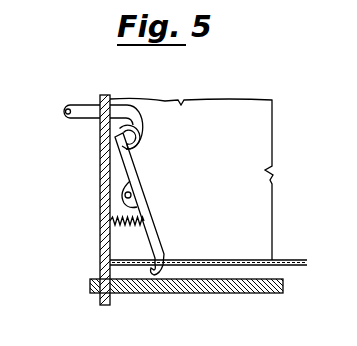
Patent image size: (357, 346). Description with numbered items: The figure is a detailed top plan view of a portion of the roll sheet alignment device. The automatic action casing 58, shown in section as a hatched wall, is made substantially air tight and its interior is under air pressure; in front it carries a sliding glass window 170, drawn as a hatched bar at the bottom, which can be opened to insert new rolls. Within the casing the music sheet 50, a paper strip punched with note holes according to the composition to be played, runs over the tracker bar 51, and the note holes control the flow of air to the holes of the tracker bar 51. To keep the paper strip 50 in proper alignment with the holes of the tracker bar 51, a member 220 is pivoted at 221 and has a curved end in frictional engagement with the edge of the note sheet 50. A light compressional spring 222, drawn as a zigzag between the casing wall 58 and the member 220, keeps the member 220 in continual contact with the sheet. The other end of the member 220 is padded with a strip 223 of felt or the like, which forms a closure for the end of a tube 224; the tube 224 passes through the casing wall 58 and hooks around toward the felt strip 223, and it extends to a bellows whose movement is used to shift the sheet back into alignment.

The music sheet 50 is at (283, 260).
The tracker bar 51 is at (272, 149).
The automatic action casing 58 is at (100, 185).
The sliding glass window 170 is at (192, 294).
The member 220 is at (160, 250).
The pivot 221 is at (131, 195).
The compressional spring 222 is at (116, 225).
The strip of felt 223 is at (134, 152).
The tube 224 is at (142, 120).